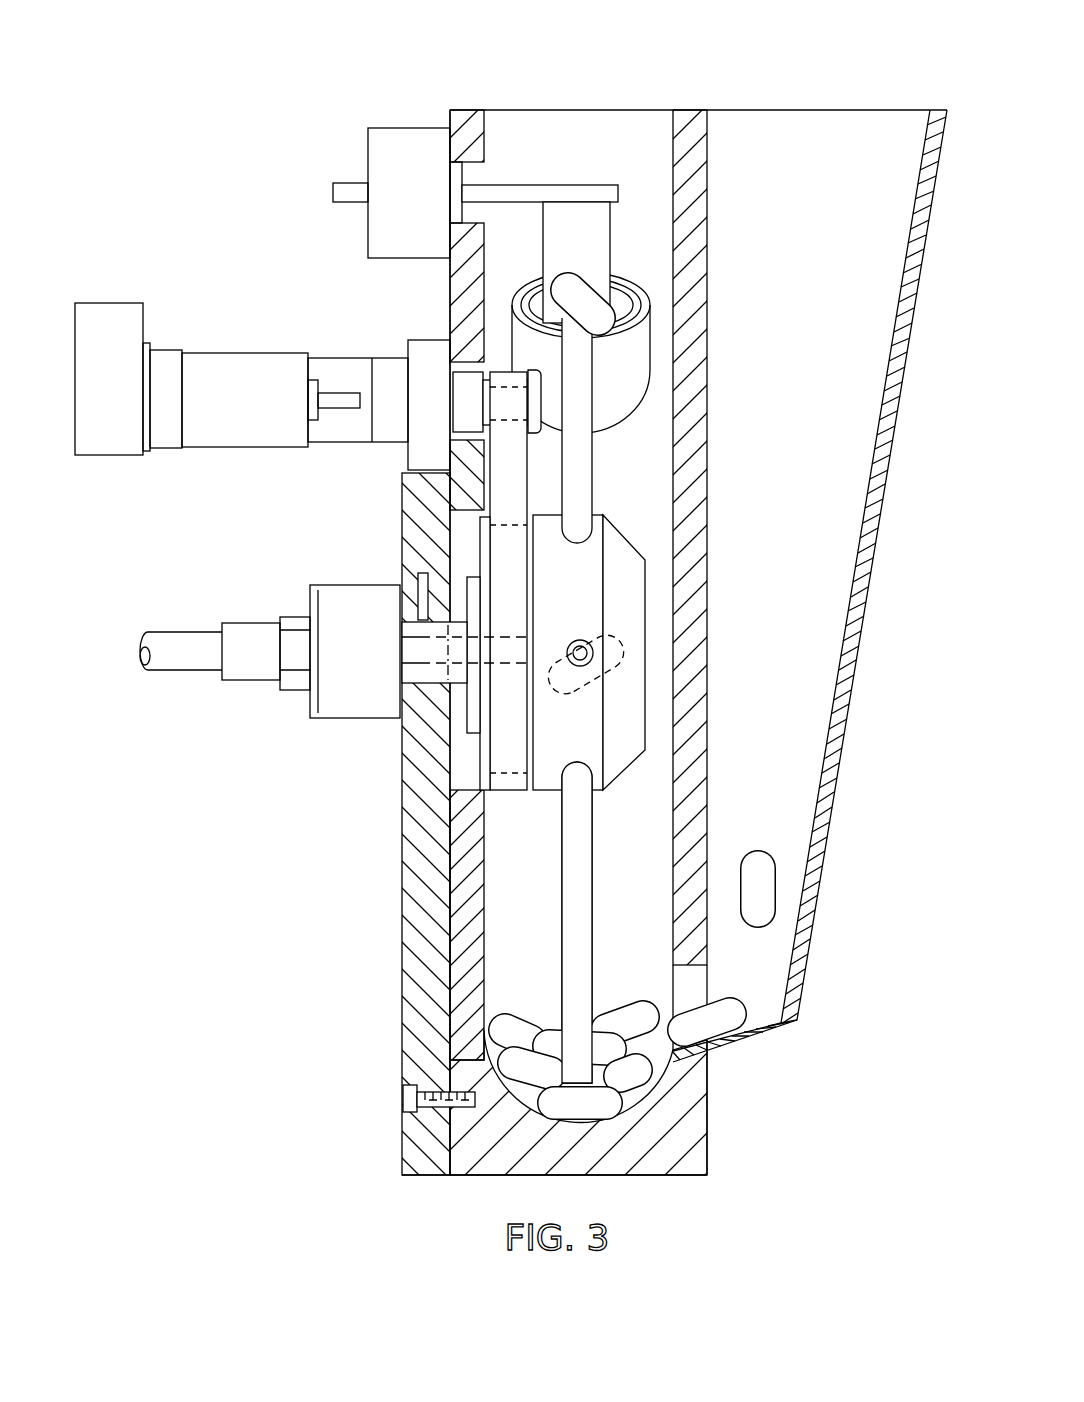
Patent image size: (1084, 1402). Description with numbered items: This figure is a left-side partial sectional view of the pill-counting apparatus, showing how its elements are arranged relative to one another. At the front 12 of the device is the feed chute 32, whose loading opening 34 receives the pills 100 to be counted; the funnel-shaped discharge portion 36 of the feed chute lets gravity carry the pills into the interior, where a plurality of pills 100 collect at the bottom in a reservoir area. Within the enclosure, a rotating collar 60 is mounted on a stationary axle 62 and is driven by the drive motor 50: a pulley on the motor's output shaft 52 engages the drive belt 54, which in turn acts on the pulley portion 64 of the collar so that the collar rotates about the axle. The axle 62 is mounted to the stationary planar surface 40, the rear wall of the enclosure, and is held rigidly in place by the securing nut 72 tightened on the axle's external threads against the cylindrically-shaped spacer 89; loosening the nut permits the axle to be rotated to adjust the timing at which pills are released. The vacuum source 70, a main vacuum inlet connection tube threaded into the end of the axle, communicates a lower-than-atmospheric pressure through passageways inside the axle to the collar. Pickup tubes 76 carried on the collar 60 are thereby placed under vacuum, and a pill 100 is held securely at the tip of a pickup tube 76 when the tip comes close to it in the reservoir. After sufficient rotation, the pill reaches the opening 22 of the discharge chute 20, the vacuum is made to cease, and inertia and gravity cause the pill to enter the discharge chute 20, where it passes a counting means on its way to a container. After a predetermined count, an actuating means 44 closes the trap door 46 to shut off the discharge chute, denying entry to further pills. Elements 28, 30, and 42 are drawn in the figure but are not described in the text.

The front 12 is at (710, 1108).
The discharge chute 20 is at (625, 367).
The opening of the discharge chute 22 is at (620, 300).
The partition wall 28 is at (693, 110).
The bottom surface 30 is at (650, 1178).
The feed chute 32 is at (857, 642).
The loading opening 34 is at (809, 534).
The discharge portion 36 is at (690, 978).
The stationary planar surface 40 is at (402, 990).
The set screw 42 is at (403, 1098).
The means for actuating trap door 44 is at (366, 150).
The trap door 46 is at (575, 222).
The drive motor 50 is at (262, 350).
The output shaft 52 is at (540, 400).
The drive belt 54 is at (510, 725).
The rotating collar 60 is at (632, 535).
The axle 62 is at (245, 633).
The pulley portion 64 is at (525, 792).
The vacuum source 70 is at (183, 640).
The securing nut 72 is at (292, 615).
The pickup tubes 76 is at (581, 472).
The cylindrically-shaped spacer 89 is at (345, 705).
The pills 100 is at (573, 290).